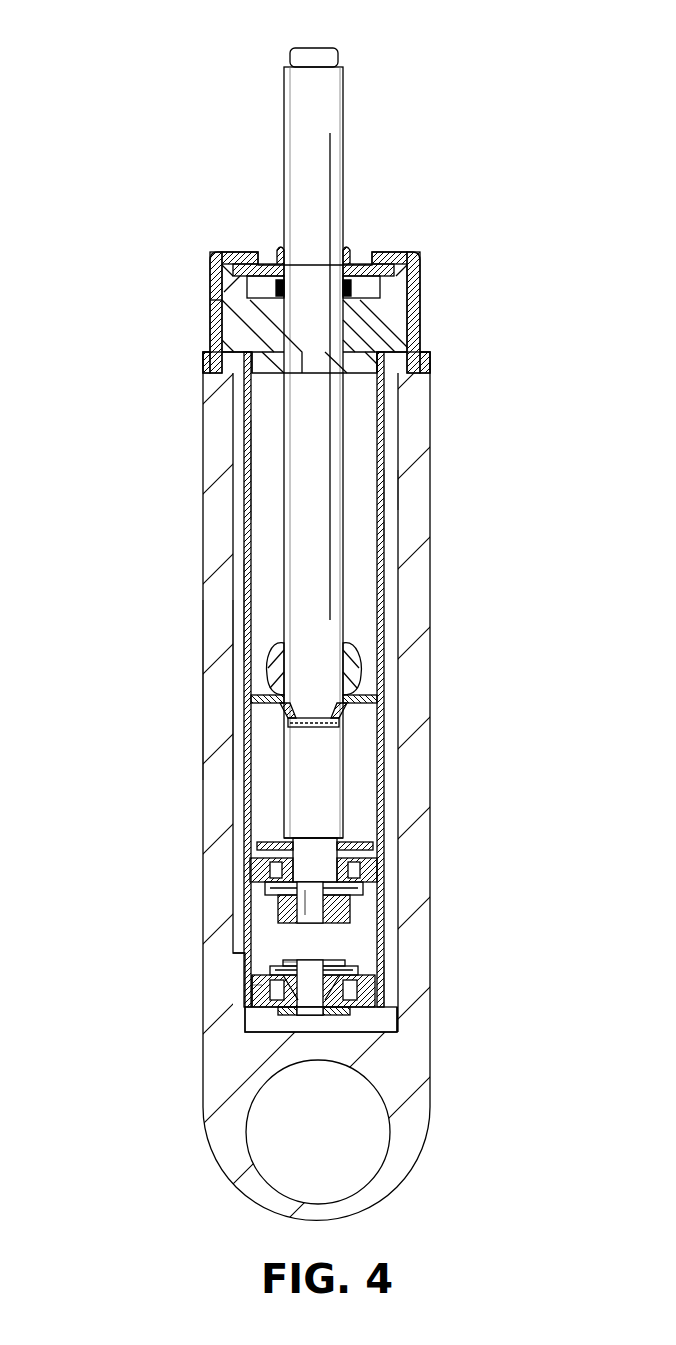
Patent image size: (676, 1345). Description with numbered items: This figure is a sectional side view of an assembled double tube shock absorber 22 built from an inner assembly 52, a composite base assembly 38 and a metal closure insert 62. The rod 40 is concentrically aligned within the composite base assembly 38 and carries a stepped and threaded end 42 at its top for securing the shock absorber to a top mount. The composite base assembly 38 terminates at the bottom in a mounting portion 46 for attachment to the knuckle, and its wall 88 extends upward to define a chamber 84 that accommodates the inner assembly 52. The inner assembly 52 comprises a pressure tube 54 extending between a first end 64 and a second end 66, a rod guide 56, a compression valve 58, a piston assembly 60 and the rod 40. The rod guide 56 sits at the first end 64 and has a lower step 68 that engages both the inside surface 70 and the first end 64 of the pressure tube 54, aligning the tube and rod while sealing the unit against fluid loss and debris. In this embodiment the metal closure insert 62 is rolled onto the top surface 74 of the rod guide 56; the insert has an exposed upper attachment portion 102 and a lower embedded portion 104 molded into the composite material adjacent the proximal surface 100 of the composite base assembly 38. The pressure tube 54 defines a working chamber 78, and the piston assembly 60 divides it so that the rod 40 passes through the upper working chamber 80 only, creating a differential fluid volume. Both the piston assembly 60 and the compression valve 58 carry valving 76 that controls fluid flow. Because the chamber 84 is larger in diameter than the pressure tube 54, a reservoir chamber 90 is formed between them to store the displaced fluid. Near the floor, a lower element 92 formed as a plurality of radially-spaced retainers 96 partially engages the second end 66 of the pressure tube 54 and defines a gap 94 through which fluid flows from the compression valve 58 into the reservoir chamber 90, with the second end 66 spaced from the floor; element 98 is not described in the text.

The shock absorber 22 is at (95, 458).
The composite base assembly 38 is at (434, 778).
The rod 40 is at (310, 158).
The stepped and threaded end 42 is at (305, 54).
The mounting portion 46 is at (400, 1105).
The inner assembly 52 is at (388, 578).
The pressure tube 54 is at (248, 612).
The rod guide 56 is at (368, 252).
The compression valve 58 is at (355, 963).
The piston assembly 60 is at (376, 900).
The metal closure insert 62 is at (405, 340).
The first end 64 is at (392, 268).
The second end 66 is at (396, 1013).
The lower step 68 is at (262, 337).
The inside surface 70 is at (266, 408).
The top surface 74 is at (233, 256).
The valving 76 is at (268, 965).
The working chamber 78 is at (268, 452).
The upper working chamber 80 is at (259, 508).
The chamber 84 is at (392, 490).
The wall 88 is at (218, 688).
The reservoir chamber 90 is at (392, 530).
The lower element 92 is at (224, 977).
The gap 94 is at (396, 976).
The radially-spaced retainers 96 is at (248, 992).
The valve passage 98 is at (275, 966).
The proximal surface 100 is at (425, 348).
The upper attachment portion 102 is at (203, 273).
The lower embedded portion 104 is at (203, 362).